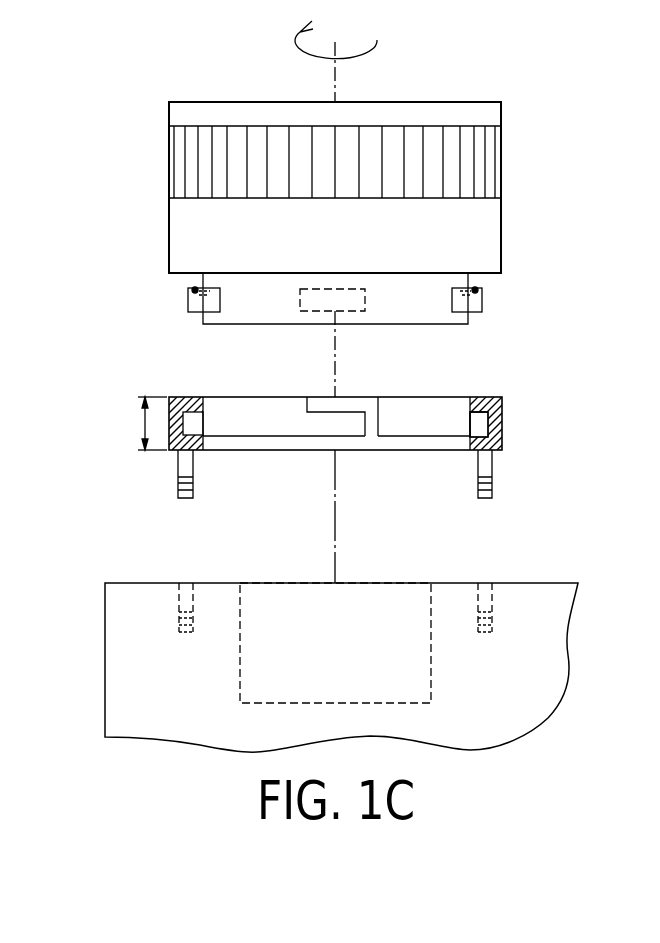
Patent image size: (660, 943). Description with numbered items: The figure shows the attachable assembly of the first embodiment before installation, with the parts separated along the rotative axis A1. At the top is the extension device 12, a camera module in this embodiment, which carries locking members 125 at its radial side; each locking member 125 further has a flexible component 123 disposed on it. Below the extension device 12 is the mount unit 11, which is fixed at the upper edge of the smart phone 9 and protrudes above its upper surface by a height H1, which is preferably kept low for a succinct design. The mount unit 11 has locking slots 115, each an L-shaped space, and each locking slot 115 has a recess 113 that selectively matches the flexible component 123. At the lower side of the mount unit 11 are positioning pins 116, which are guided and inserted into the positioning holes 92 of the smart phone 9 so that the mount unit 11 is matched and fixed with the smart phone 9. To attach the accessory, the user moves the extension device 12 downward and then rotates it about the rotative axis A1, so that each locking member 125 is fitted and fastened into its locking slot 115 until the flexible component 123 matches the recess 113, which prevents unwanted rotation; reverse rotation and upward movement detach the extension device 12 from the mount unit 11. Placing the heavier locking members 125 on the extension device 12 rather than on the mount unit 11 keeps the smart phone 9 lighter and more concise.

The extension device 12 is at (535, 181).
The flexible component 123 is at (478, 288).
The locking member 125 is at (482, 300).
The mount unit 11 is at (527, 421).
The locking slot 115 is at (466, 421).
The recess 113 is at (479, 402).
The positioning pin 116 is at (178, 487).
The smart phone 9 is at (552, 641).
The positioning hole 92 is at (488, 602).
The rotative axis A1 is at (336, 84).
The height H1 is at (139, 423).